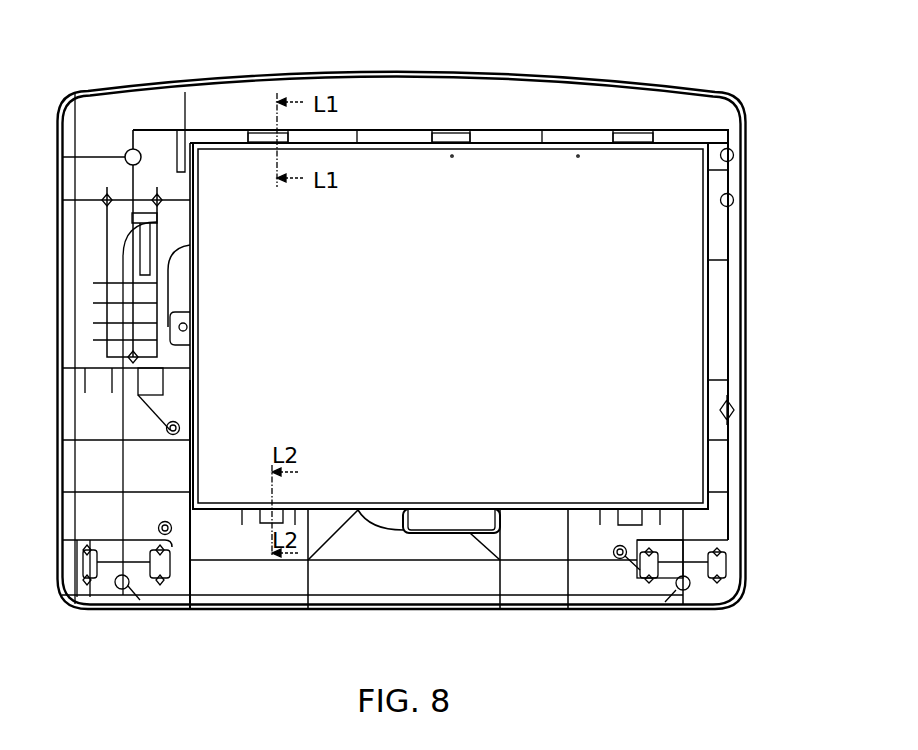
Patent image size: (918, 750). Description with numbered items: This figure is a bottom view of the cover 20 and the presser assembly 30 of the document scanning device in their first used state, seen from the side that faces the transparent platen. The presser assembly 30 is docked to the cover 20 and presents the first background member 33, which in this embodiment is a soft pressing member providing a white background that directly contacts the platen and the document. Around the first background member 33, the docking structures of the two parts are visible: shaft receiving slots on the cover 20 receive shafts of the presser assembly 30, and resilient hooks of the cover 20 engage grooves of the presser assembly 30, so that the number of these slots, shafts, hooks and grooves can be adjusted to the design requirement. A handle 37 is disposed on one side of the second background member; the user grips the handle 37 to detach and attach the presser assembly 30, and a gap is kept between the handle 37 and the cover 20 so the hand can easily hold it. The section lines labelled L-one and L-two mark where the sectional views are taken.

The cover 20 is at (107, 84).
The presser assembly 30 is at (397, 137).
The first background member 33 is at (690, 228).
The handle 37 is at (440, 520).